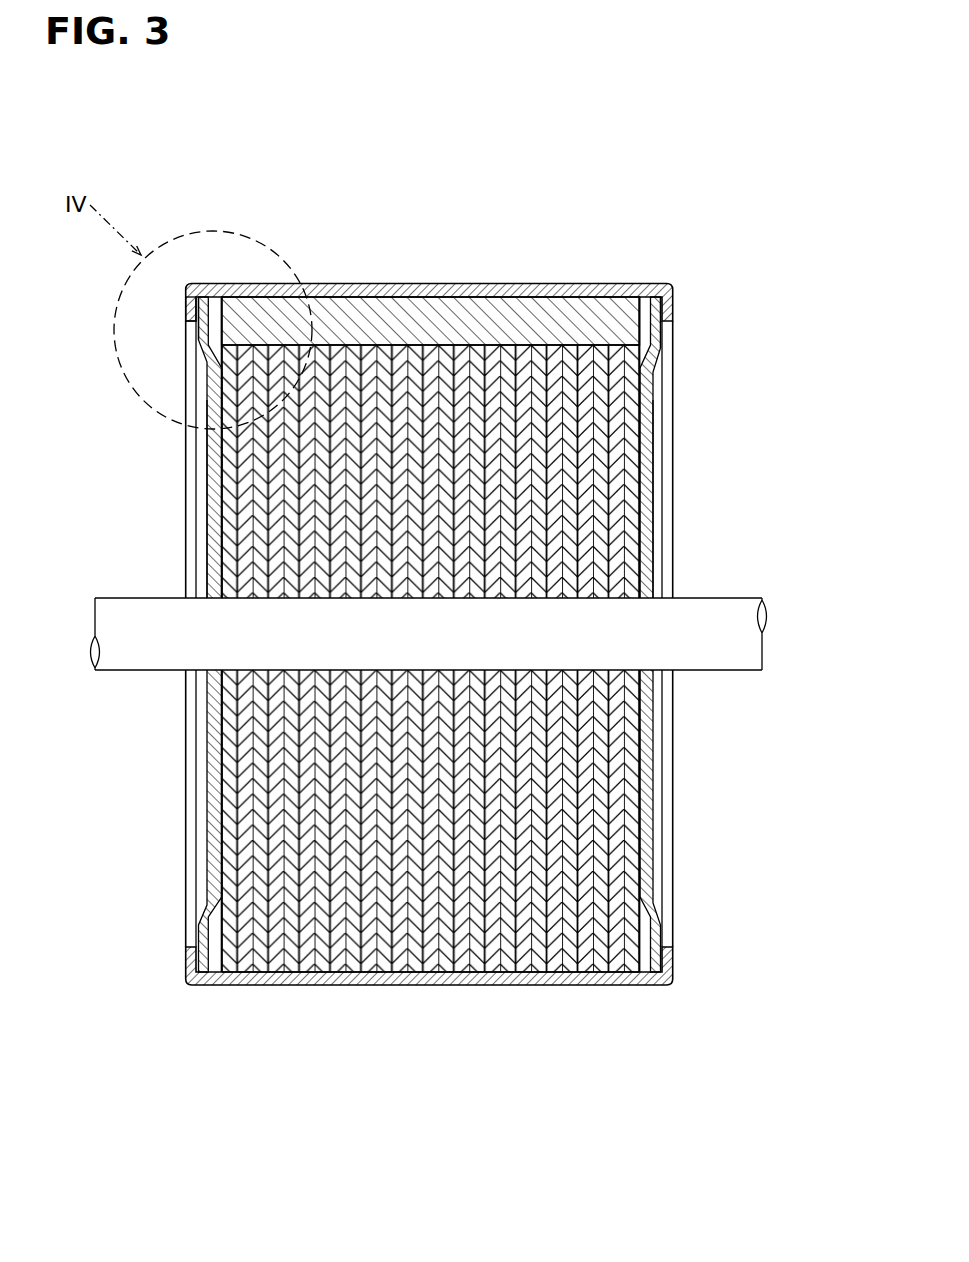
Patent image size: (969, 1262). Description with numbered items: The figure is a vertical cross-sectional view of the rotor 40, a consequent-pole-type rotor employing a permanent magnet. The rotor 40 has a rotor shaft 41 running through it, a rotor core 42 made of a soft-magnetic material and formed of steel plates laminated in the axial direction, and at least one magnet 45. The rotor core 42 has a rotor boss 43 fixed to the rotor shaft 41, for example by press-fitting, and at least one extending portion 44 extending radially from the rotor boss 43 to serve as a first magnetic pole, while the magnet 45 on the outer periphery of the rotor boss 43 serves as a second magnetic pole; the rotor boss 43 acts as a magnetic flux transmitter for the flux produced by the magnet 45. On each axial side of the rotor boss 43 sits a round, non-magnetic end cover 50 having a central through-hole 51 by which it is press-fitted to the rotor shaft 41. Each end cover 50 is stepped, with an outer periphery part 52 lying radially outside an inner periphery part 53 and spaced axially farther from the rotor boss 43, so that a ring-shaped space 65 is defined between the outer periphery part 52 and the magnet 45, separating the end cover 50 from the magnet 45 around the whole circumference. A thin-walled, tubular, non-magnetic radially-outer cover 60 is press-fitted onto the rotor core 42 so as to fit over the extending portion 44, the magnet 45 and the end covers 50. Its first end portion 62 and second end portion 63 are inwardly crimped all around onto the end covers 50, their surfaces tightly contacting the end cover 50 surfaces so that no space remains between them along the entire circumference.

The rotor 40 is at (410, 580).
The rotor shaft 41 is at (752, 647).
The rotor core 42 is at (431, 695).
The rotor boss 43 is at (397, 803).
The extending portion 44 is at (384, 960).
The magnet 45 is at (368, 322).
The end cover 50 is at (428, 634).
The through-hole 51 is at (215, 672).
The outer periphery part 52 is at (200, 335).
The inner periphery part 53 is at (213, 525).
The radially-outer cover 60 is at (429, 318).
The first end portion 62 is at (186, 303).
The second end portion 63 is at (668, 310).
The space 65 is at (213, 308).